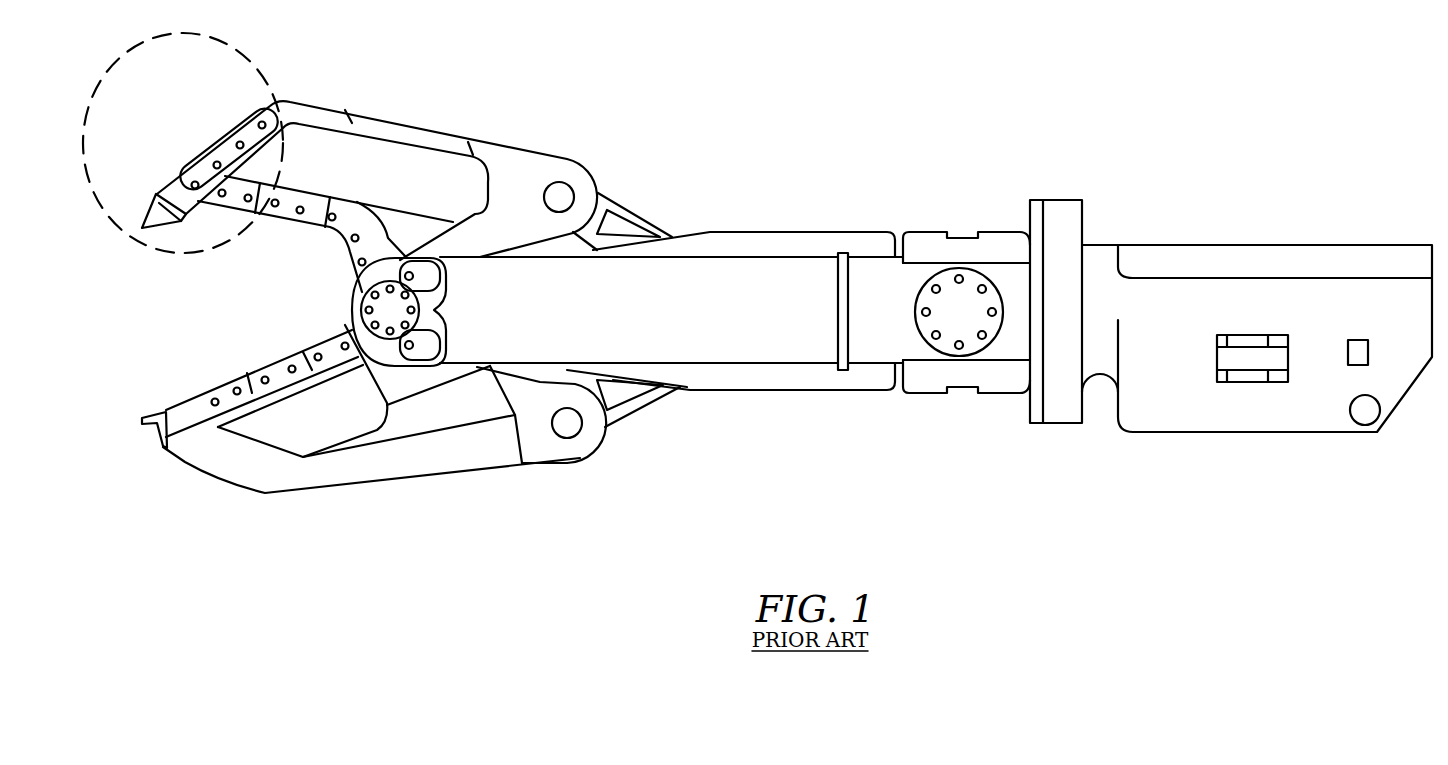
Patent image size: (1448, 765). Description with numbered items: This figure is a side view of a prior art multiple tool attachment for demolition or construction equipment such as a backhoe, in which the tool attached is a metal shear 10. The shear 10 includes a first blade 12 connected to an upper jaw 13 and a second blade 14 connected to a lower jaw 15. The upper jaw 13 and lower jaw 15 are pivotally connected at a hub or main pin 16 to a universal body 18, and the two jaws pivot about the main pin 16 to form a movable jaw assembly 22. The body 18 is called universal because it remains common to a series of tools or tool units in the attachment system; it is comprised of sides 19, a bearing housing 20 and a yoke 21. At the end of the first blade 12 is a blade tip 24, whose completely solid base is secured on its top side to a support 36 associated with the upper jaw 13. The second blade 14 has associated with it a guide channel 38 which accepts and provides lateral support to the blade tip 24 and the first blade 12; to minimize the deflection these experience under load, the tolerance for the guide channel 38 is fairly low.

The metal shear 10 is at (845, 204).
The first blade 12 is at (293, 228).
The upper jaw 13 is at (397, 124).
The second blade 14 is at (275, 360).
The lower jaw 15 is at (288, 490).
The main pin 16 is at (377, 307).
The universal body 18 is at (1089, 166).
The sides 19 is at (762, 230).
The bearing housing 20 is at (1305, 243).
The yoke 21 is at (958, 235).
The movable jaw assembly 22 is at (339, 104).
The blade tip 24 is at (157, 220).
The support 36 is at (173, 190).
The guide channel 38 is at (182, 398).